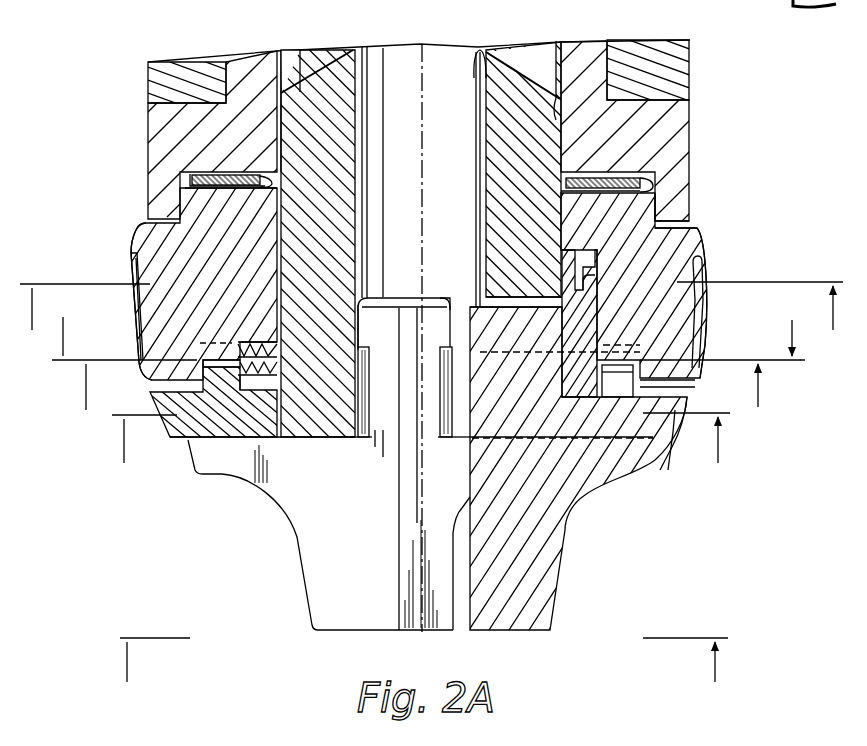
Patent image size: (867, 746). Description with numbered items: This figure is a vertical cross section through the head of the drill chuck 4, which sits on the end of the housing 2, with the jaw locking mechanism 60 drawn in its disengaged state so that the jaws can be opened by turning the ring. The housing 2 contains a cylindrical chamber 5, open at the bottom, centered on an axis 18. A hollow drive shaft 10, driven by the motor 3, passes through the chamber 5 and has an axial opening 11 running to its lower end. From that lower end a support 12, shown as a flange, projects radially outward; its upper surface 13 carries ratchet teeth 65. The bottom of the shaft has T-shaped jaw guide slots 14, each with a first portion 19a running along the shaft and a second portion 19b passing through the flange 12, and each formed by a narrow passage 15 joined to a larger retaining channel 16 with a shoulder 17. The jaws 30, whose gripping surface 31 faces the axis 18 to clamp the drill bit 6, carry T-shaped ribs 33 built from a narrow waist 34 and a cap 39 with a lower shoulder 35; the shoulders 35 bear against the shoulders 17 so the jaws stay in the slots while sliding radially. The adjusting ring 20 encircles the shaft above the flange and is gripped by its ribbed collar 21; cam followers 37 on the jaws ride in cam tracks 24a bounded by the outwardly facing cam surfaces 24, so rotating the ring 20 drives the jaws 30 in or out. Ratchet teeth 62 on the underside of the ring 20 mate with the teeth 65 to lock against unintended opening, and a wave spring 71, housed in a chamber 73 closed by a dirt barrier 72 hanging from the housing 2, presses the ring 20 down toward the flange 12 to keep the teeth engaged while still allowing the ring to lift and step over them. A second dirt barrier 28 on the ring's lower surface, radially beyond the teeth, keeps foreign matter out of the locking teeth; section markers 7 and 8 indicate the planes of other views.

The housing 2 is at (688, 118).
The drill chuck 4 is at (658, 500).
The cylindrical chamber 5 is at (546, 60).
The drive shaft 10 is at (527, 84).
The axial opening 11 is at (480, 52).
The support 12 is at (167, 435).
The upper surface 13 is at (677, 385).
The jaw guide slots 14 is at (508, 292).
The narrow passage 15 is at (378, 445).
The retaining channel 16 is at (366, 305).
The shoulder 17 is at (375, 330).
The axis 18 is at (430, 68).
The first portion 19a is at (375, 452).
The second portion 19b is at (660, 448).
The adjusting ring 20 is at (714, 245).
The ribbed collar 21 is at (708, 322).
The outwardly facing cam surfaces 24 is at (585, 260).
The cam tracks 24a is at (660, 247).
The second dirt barrier 28 is at (670, 372).
The jaws 30 is at (302, 545).
The gripping surface 31 is at (407, 600).
The T-shaped ribs 33 is at (412, 292).
The narrow waist 34 is at (455, 460).
The lower shoulder 35 is at (437, 400).
The cam followers 37 is at (590, 285).
The cap 39 is at (449, 290).
The locking mechanism 60 is at (223, 384).
The ratchet teeth 62 is at (203, 352).
The ratchet teeth 65 is at (203, 364).
The wave spring 71 is at (637, 173).
The dirt barrier 72 is at (693, 205).
The chamber 73 is at (643, 183).
The motor 3 is at (421, 565).
The drill bit 6 is at (417, 403).
The section line 7- 7 is at (428, 324).
The section line 8- 8 is at (431, 323).